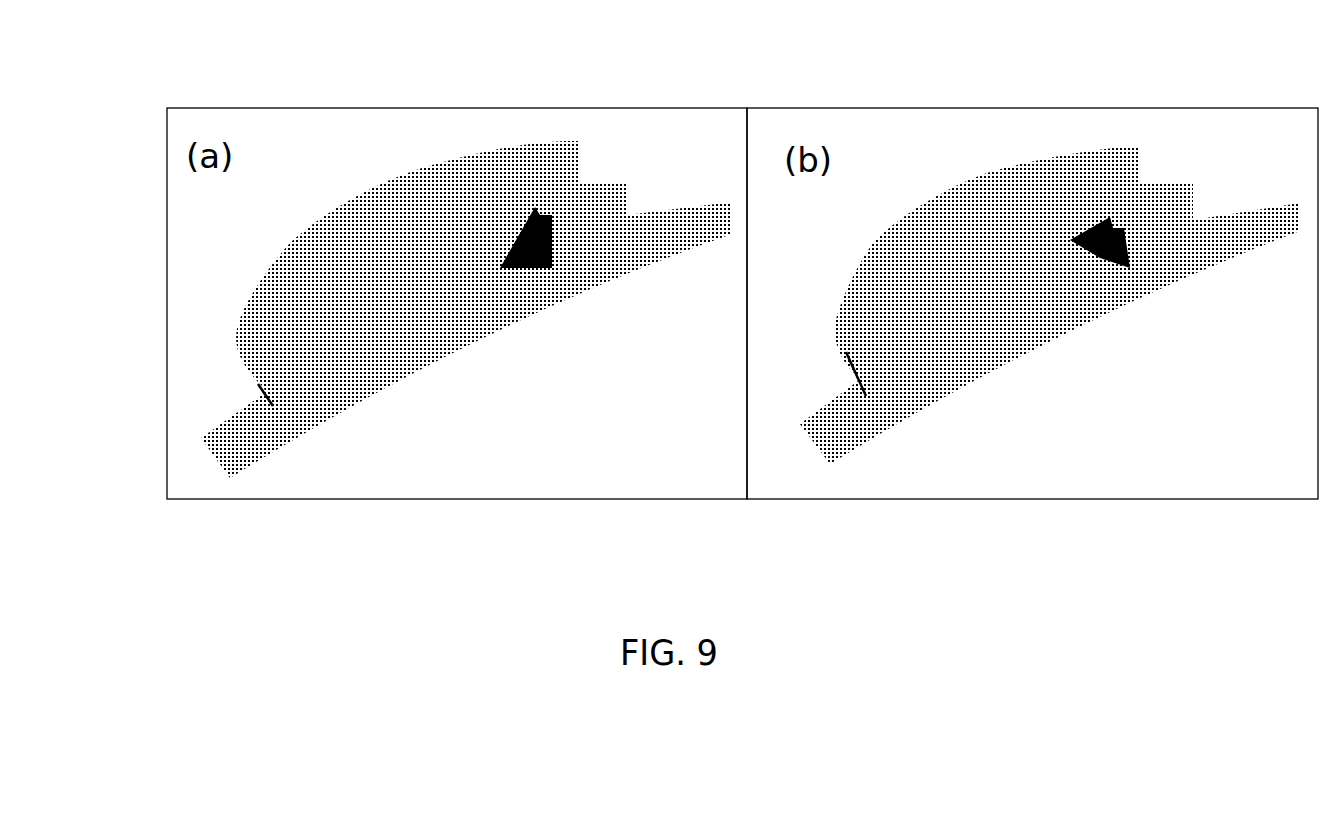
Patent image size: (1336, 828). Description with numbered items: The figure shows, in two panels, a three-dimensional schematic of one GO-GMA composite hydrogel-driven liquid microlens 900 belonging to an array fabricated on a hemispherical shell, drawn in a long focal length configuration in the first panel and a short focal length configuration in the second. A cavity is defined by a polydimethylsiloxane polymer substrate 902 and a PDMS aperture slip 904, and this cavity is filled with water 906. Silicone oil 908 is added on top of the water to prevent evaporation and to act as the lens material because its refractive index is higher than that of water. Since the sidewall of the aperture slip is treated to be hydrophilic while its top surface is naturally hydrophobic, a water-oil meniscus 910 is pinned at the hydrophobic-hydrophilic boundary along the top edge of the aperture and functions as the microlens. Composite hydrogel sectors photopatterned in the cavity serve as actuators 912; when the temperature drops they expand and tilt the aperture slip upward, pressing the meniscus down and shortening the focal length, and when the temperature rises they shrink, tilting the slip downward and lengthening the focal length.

The liquid microlens 900 is at (355, 97).
The polydimethylsiloxane polymer substrate 902 is at (232, 419).
The PDMS aperture slip 904 is at (580, 210).
The water 906 is at (1057, 295).
The silicone oil 908 is at (1072, 241).
The water-oil meniscus 910 is at (449, 302).
The actuators 912 is at (343, 362).